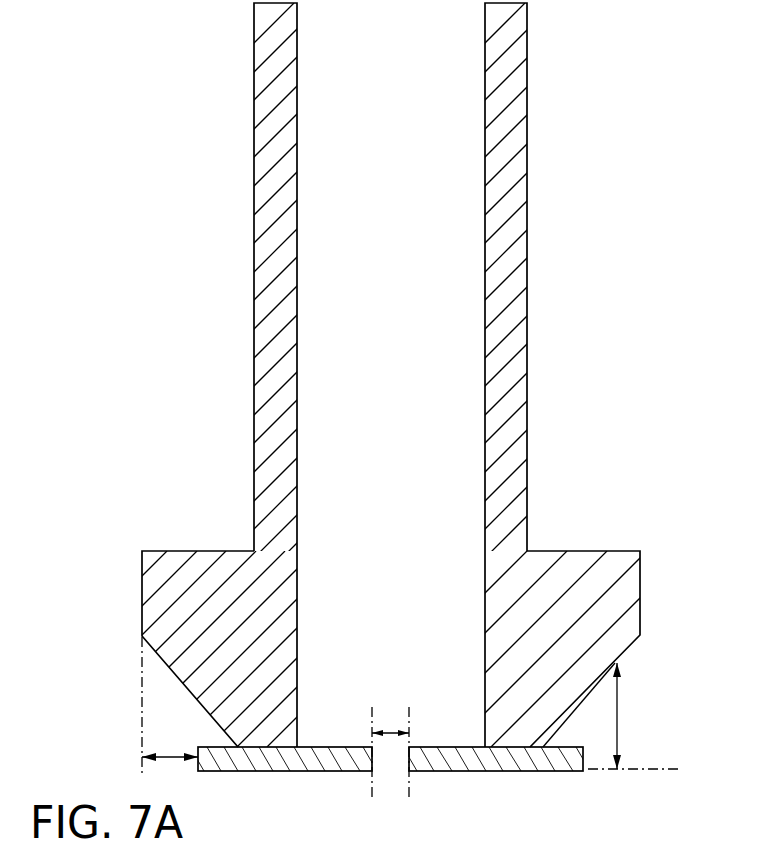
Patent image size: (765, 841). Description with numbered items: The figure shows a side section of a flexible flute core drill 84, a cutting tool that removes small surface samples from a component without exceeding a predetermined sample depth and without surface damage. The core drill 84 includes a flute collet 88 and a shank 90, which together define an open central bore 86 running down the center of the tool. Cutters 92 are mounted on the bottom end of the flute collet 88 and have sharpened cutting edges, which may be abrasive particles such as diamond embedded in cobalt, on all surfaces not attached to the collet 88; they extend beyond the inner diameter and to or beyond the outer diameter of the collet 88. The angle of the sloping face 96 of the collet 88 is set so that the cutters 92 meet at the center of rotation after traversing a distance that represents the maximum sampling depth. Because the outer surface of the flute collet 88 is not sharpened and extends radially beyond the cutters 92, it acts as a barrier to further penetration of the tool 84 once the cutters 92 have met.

The flexible flute core drill 84 is at (205, 103).
The transport gap 86 is at (406, 636).
The flute collet 88 is at (142, 573).
The shank 90 is at (254, 495).
The cutters 92 is at (440, 772).
The sloping face 96 is at (617, 663).